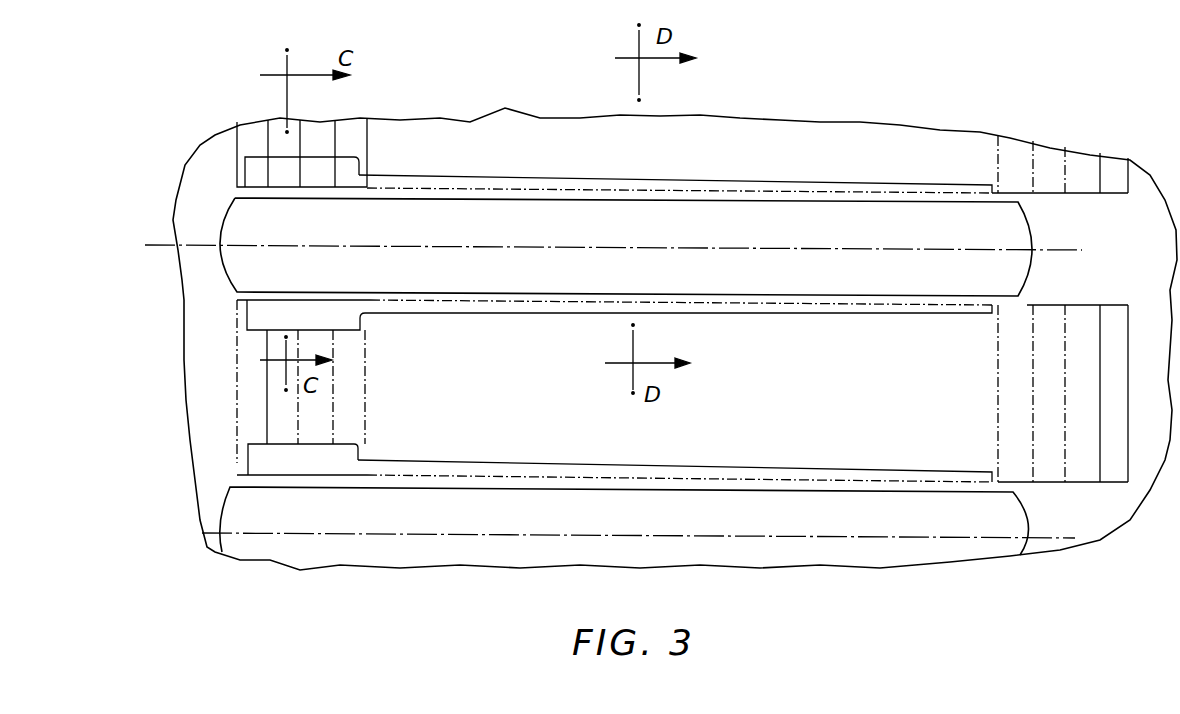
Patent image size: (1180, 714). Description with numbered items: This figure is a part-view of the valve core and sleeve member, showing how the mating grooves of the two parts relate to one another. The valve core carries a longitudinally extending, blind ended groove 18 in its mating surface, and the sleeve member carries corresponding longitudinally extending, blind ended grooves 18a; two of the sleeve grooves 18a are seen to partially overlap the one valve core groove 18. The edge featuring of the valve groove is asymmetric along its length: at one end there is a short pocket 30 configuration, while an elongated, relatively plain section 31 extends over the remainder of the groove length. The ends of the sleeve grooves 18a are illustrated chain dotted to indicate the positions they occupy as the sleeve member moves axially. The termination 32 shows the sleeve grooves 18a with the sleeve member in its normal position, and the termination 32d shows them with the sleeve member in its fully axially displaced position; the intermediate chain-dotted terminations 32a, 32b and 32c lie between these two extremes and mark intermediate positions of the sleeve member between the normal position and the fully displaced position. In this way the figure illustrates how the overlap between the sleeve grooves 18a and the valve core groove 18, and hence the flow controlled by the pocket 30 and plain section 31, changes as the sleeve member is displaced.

The groove 18 is at (1002, 223).
The sleeve groove 18a is at (248, 372).
The short pocket 30 is at (317, 172).
The elongated plain section 31 is at (508, 187).
The termination of sleeve grooves 32 is at (997, 445).
The bearing element 32a is at (1030, 462).
The bearing element 32b is at (1062, 455).
The bearing element 32c is at (1095, 463).
The termination of sleeve grooves in fully displaced position 32d is at (1125, 462).